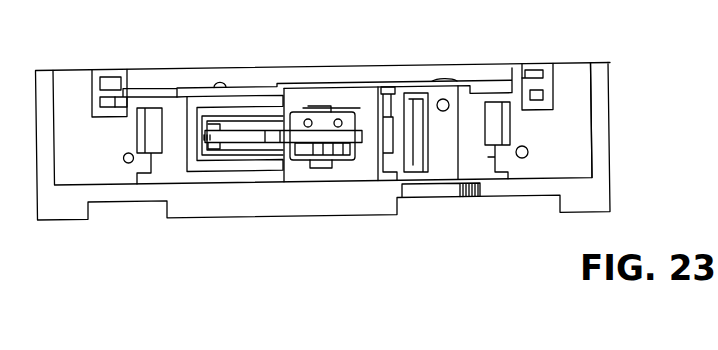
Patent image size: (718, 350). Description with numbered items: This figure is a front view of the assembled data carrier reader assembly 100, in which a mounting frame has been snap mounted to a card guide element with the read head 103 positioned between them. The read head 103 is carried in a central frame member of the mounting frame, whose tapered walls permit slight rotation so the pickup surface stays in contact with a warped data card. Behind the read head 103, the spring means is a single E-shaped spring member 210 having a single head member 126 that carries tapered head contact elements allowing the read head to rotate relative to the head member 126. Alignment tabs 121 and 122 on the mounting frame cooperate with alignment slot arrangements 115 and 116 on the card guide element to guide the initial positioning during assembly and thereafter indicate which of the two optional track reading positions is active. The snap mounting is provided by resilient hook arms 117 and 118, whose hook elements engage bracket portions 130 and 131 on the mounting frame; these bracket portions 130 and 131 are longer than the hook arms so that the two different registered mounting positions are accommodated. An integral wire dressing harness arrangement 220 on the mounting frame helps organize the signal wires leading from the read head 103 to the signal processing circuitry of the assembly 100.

The data carrier reader assembly 100 is at (692, 107).
The read head 103 is at (332, 110).
The alignment slot arrangement 115 is at (557, 72).
The alignment slot arrangement 116 is at (98, 72).
The resilient hook arm 117 is at (503, 122).
The resilient hook arm 118 is at (148, 135).
The alignment tab 121 is at (524, 92).
The alignment tab 122 is at (127, 100).
The head member 126 is at (318, 135).
The bracket portion 130 is at (490, 158).
The bracket portion 131 is at (163, 163).
The E-shaped spring member 210 is at (237, 168).
The wire dressing harness arrangement 220 is at (421, 157).